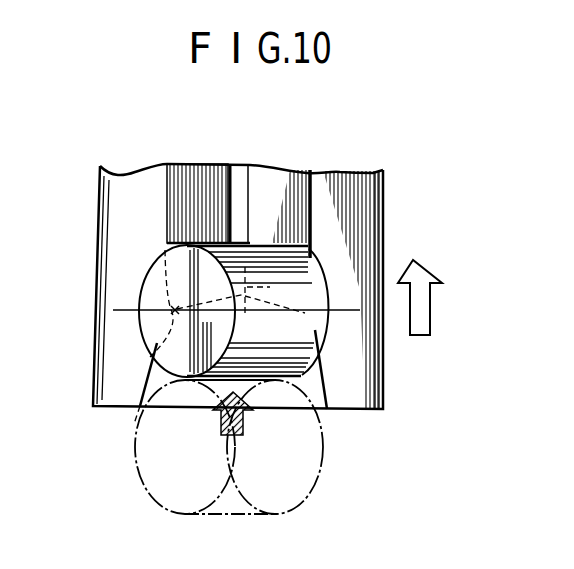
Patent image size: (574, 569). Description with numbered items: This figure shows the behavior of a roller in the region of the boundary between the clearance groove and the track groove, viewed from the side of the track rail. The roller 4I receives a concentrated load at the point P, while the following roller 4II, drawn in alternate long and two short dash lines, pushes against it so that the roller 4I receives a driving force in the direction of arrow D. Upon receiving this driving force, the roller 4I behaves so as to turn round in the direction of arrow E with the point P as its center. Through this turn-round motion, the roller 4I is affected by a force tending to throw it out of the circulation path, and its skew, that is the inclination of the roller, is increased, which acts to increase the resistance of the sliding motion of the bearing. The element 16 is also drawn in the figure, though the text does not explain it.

The housing panel 16 is at (360, 200).
The roller 4I is at (297, 333).
The roller 4II is at (290, 487).
The arrow D is at (220, 423).
The arrow E is at (423, 306).
The point P is at (150, 355).